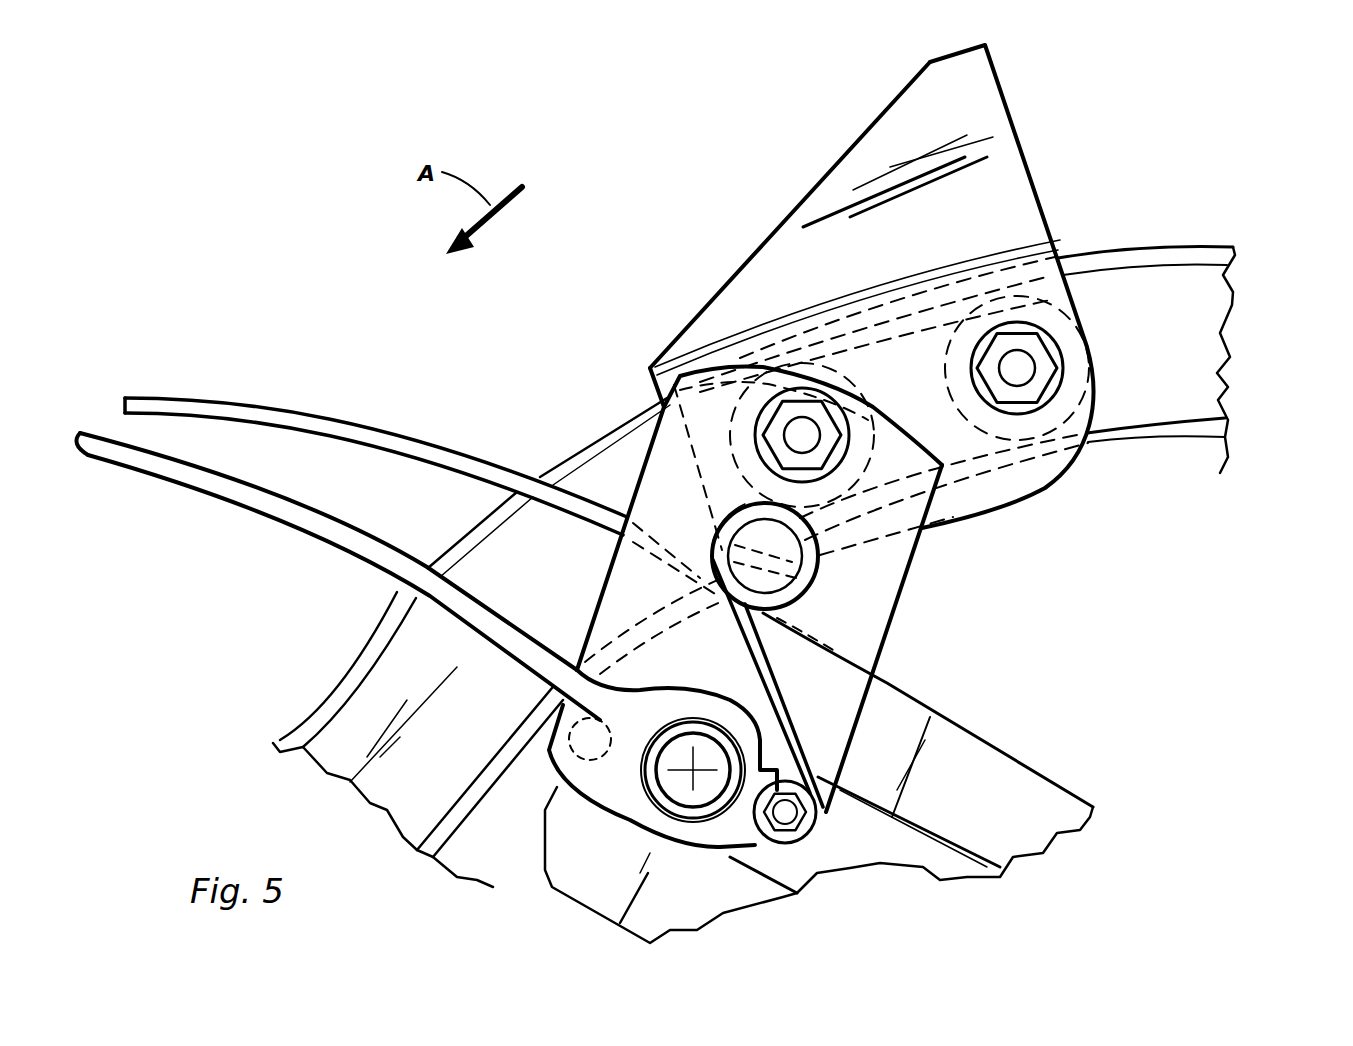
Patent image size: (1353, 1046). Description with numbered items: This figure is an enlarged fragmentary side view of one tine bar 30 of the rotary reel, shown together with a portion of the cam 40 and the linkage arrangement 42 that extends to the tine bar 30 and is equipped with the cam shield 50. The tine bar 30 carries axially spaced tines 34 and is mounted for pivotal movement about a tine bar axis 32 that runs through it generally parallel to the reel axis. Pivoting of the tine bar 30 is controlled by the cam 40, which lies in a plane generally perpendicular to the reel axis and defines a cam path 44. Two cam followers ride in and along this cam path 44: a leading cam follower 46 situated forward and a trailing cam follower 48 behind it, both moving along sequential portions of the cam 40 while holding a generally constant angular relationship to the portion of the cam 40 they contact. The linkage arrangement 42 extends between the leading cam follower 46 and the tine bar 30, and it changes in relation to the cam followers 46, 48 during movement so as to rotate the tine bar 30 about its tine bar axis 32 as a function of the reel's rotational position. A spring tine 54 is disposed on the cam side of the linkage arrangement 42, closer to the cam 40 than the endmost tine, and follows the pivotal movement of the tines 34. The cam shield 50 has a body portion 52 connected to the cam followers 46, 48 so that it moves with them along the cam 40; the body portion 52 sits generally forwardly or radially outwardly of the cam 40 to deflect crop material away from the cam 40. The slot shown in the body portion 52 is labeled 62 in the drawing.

The tine bar 30 is at (717, 847).
The tine bar axis 32 is at (645, 823).
The tines 34 is at (178, 474).
The cam 40 is at (1186, 246).
The linkage arrangement 42 is at (912, 570).
The cam path 44 is at (1173, 325).
The leading cam follower 46 is at (847, 393).
The trailing cam follower 48 is at (1058, 408).
The cam shield 50 is at (1046, 117).
The body portion 52 is at (878, 137).
The spring tine 54 is at (446, 448).
The slot 62 is at (790, 212).